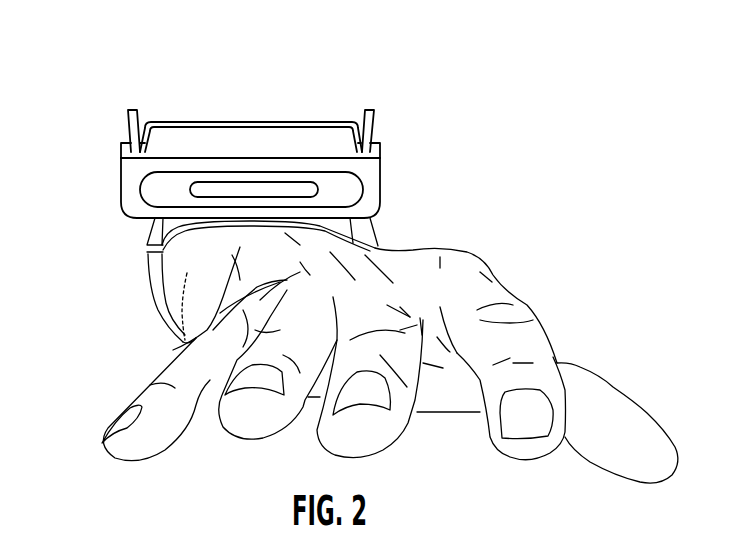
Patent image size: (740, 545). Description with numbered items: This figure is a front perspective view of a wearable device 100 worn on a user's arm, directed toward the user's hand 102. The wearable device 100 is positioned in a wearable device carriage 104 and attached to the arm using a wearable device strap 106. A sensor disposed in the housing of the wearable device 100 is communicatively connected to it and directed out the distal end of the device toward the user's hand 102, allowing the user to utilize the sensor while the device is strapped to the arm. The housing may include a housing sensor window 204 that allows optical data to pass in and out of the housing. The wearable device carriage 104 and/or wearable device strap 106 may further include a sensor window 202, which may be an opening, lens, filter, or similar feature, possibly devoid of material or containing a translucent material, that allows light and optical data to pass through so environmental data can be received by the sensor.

The wearable device 100 is at (246, 84).
The user's hand 102 is at (206, 314).
The wearable device carriage 104 is at (149, 227).
The wearable device strap 106 is at (141, 272).
The sensor window 202 is at (339, 190).
The housing sensor window 204 is at (310, 181).